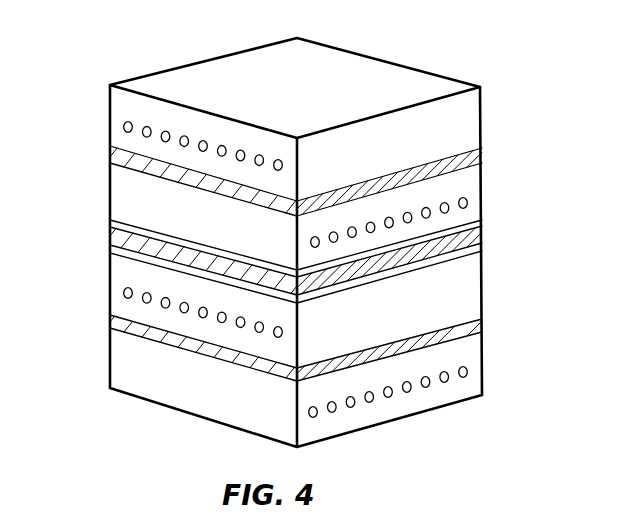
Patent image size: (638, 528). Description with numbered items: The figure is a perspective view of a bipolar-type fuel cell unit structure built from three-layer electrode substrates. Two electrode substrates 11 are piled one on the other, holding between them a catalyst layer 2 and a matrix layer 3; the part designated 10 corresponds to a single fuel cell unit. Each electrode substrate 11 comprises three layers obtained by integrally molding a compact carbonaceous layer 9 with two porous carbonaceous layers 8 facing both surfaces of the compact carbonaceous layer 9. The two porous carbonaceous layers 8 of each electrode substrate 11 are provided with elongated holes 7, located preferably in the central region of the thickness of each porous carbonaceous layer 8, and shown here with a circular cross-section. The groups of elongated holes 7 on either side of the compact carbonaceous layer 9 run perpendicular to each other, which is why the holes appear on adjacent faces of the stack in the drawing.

The catalyst layer 2 is at (473, 219).
The matrix layer 3 is at (475, 237).
The elongated holes 7 is at (185, 135).
The porous carbonaceous layer 8 is at (473, 102).
The compact carbonaceous layer 9 is at (476, 152).
The fuel cell unit 10 is at (525, 75).
The electrode substrate 11 is at (105, 83).